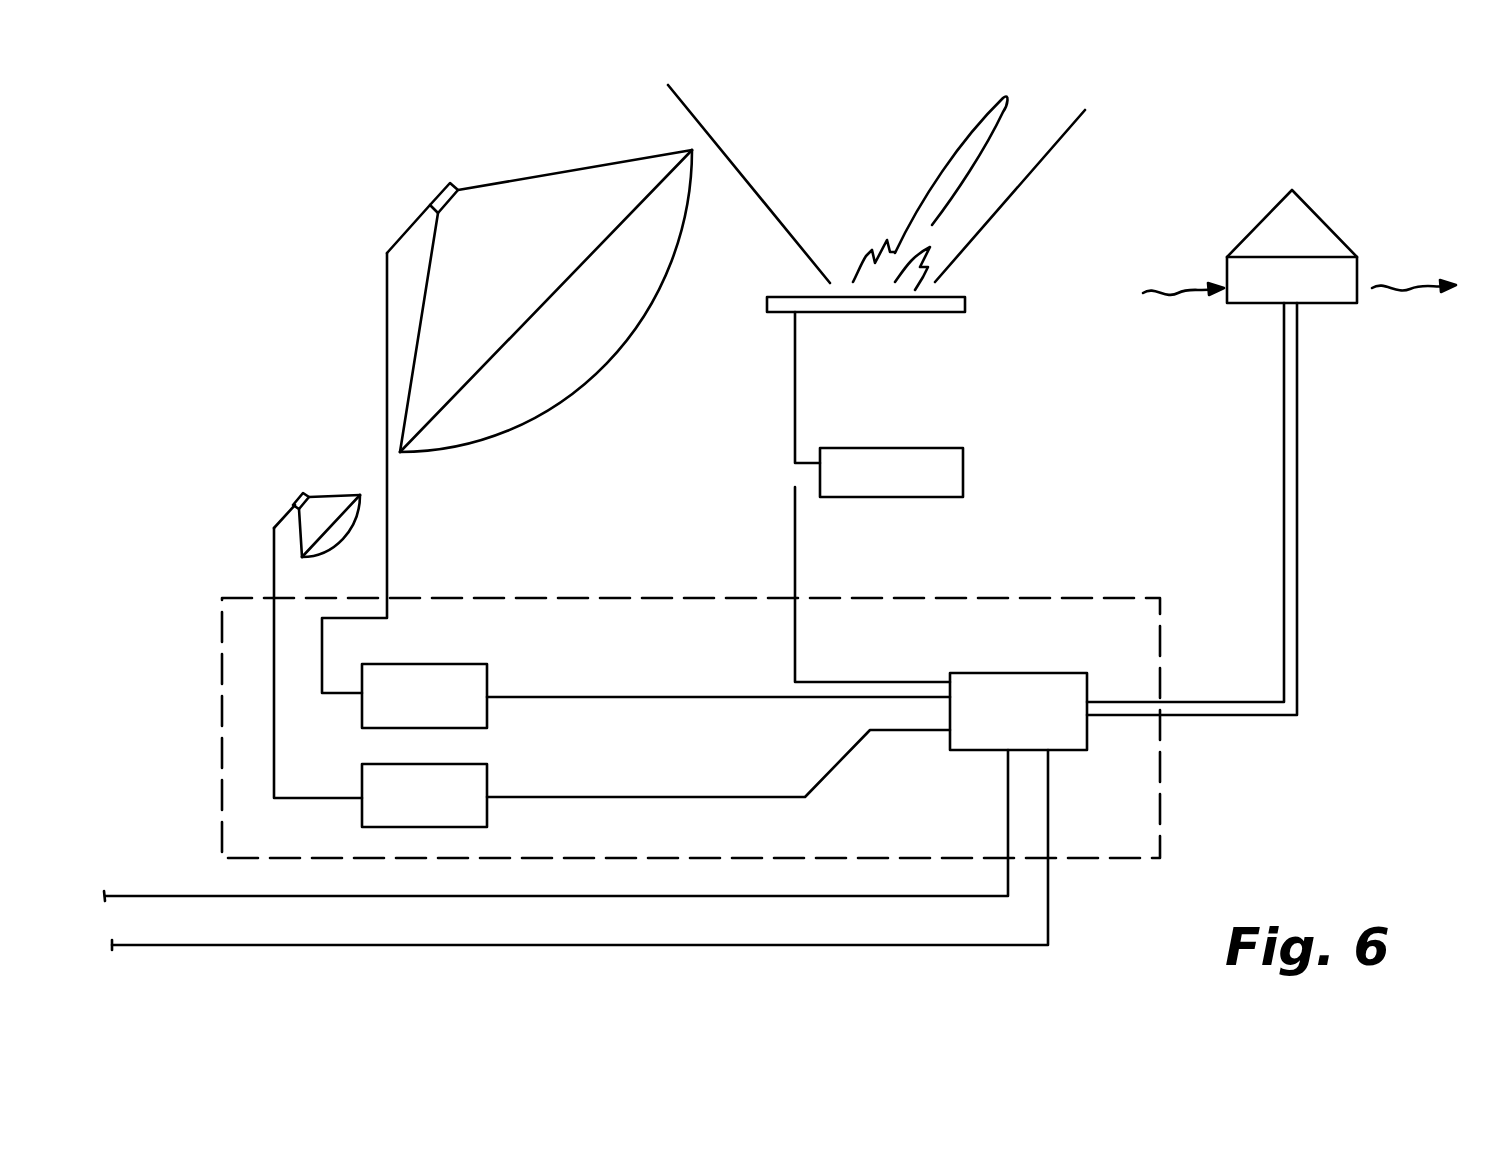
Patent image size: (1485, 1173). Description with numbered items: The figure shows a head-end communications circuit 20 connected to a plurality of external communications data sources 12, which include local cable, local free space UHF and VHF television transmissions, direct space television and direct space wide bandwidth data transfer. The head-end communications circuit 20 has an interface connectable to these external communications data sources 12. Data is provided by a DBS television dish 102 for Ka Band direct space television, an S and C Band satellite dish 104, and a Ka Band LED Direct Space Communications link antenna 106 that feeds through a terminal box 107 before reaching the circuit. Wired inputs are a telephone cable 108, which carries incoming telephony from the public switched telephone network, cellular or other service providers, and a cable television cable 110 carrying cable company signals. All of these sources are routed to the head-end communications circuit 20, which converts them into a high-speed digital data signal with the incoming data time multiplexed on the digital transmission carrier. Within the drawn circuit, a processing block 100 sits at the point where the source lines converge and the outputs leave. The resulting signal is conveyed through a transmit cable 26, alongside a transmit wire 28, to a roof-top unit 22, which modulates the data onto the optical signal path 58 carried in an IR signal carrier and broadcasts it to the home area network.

The external communications data sources 12 is at (381, 198).
The head-end communications circuit 20 is at (1123, 597).
The roof-top unit 22 is at (1322, 232).
The transmit cable 26 is at (1284, 530).
The transmit wire 28 is at (1297, 568).
The optical signal path 58 is at (1167, 283).
The control unit 100 is at (1037, 688).
The DBS television dish 102 is at (325, 505).
The S & C Band satellite dish 104 is at (597, 366).
The Ka Band LED Direct Space Communications link antenna 106 is at (905, 313).
The terminal box 107 is at (962, 462).
The telephone cable 108 is at (795, 897).
The cable television cable 110 is at (709, 947).